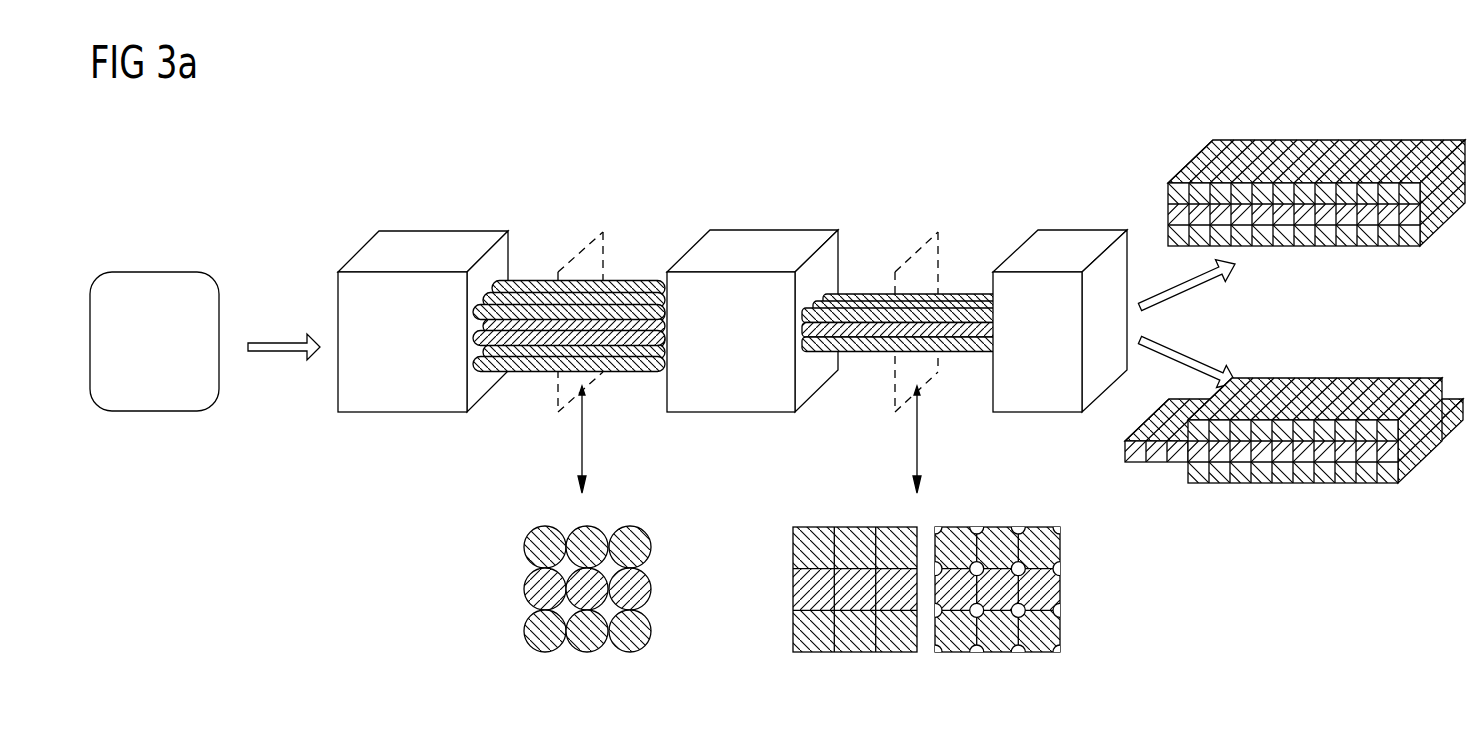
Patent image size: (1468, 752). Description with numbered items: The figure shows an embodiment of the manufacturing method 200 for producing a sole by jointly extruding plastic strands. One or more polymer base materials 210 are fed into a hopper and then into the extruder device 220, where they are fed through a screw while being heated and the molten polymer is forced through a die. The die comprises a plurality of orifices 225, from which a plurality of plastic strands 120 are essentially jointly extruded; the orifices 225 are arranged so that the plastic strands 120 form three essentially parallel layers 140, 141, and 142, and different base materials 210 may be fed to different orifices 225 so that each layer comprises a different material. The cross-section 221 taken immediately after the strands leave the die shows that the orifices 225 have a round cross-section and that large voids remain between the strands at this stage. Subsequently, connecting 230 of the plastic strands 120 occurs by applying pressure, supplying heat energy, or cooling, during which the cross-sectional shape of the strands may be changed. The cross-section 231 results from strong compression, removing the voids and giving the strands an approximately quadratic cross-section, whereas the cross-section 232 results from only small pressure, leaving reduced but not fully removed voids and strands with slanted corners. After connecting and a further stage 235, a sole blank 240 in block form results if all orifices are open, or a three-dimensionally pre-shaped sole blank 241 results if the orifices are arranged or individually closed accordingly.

The manufacturing method 200 is at (353, 156).
The base materials 210 is at (156, 283).
The die (extruder device) 220 is at (428, 243).
The plastic strands 120 is at (536, 320).
The orifices 225 is at (455, 321).
The connecting step 230 is at (764, 243).
The layer 140 is at (868, 300).
The layer 141 is at (866, 340).
The layer 142 is at (964, 345).
The stacking stage 235 is at (1073, 243).
The sole blank (block form) 240 is at (1340, 110).
The three-dimensionally pre-shaped sole blank 241 is at (1338, 348).
The cross-section 221 is at (595, 672).
The cross-section 231 is at (874, 672).
The cross-section 232 is at (1012, 672).